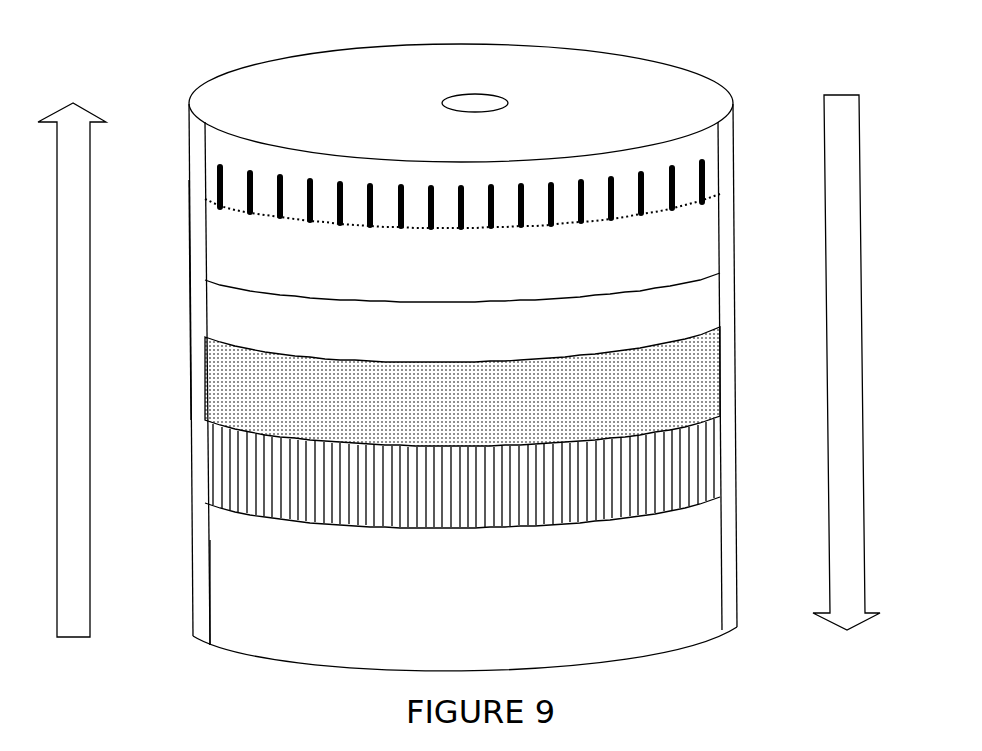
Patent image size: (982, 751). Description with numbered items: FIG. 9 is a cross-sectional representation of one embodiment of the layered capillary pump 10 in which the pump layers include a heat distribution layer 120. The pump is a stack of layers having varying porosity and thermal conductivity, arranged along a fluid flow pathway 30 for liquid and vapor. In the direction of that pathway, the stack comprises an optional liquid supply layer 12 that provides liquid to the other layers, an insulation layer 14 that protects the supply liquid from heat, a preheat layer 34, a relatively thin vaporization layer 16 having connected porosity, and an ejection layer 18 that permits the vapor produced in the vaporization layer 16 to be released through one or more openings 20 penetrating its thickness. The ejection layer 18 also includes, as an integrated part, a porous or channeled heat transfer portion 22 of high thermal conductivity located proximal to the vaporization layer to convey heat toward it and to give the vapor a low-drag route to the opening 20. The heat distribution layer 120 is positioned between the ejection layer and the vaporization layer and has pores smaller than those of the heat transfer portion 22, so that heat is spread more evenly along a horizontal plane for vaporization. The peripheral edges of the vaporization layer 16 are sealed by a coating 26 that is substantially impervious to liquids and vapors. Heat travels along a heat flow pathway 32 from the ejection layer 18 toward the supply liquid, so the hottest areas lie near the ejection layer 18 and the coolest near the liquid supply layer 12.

The layered capillary pump 10 is at (680, 88).
The liquid supply layer 12 is at (703, 566).
The insulation layer 14 is at (703, 455).
The vaporization layer 16 is at (698, 287).
The ejection layer 18 is at (707, 153).
The opening 20 is at (487, 98).
The heat transfer portion 22 is at (218, 185).
The coating 26 is at (197, 227).
The fluid flow pathway 30 is at (63, 370).
The heat flow pathway 32 is at (859, 362).
The preheat layer 34 is at (703, 380).
The heat distribution layer 120 is at (707, 220).